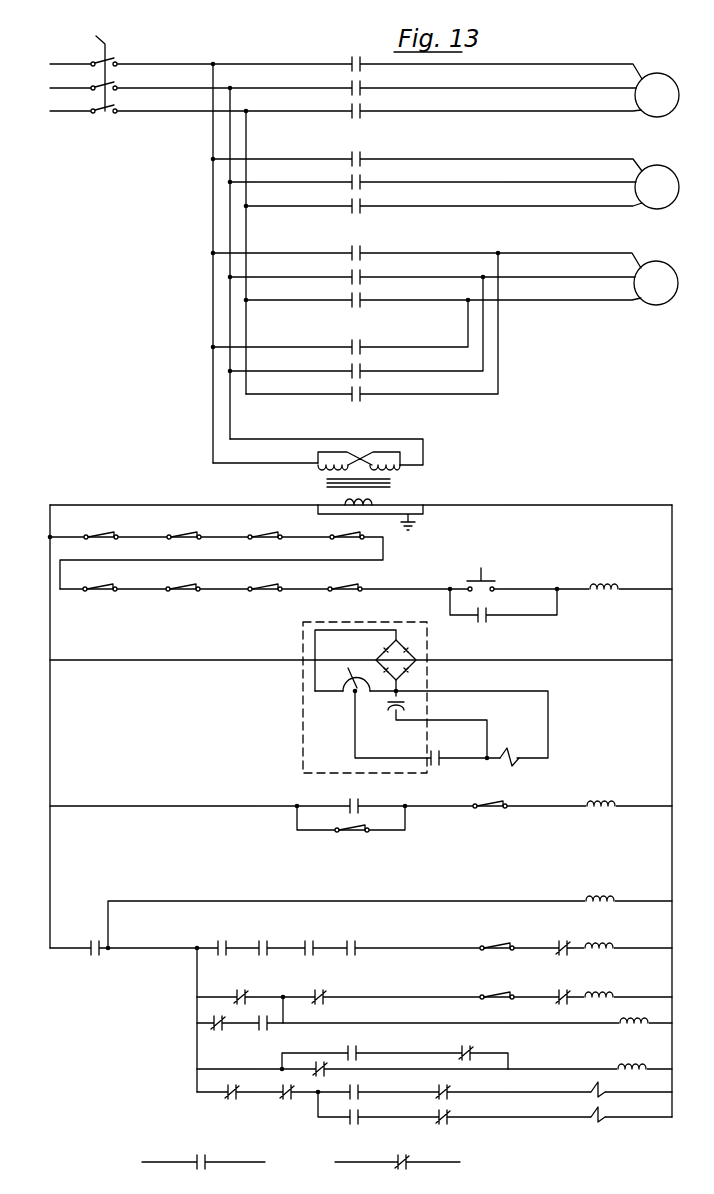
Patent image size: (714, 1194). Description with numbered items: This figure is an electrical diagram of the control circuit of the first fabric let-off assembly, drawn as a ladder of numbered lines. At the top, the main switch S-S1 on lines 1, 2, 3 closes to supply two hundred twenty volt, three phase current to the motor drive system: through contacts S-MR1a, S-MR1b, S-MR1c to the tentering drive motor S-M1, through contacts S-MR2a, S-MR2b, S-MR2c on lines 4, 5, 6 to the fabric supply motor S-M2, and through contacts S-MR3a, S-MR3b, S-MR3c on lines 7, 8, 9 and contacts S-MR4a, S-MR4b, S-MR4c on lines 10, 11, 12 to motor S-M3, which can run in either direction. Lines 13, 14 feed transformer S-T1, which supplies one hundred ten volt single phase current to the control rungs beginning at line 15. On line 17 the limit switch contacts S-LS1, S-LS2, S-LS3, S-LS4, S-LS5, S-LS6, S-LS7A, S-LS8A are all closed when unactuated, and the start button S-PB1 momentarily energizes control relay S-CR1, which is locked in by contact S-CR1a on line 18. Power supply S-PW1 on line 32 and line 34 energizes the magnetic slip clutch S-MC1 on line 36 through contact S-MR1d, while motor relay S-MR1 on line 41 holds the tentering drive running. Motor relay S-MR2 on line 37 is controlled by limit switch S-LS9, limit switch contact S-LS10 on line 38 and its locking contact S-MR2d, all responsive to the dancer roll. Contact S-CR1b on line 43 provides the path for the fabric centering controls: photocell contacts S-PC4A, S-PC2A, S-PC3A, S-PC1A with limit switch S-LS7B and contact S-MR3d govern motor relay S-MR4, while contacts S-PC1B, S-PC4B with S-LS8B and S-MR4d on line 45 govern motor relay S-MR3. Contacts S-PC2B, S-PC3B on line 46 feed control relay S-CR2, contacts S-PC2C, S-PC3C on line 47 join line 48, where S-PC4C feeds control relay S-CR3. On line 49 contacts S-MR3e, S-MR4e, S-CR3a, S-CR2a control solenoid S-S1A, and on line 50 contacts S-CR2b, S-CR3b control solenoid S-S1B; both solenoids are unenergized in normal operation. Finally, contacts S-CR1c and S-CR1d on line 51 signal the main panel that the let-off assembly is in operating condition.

The main switch S-S1 is at (94, 62).
The tentering drive motor S-M1 is at (657, 95).
The fabric supply motor S-M2 is at (657, 187).
The fabric centering motor S-M3 is at (656, 283).
The motor relay contact S-MR1a is at (346, 59).
The motor relay contact S-MR1b is at (346, 83).
The motor relay contact S-MR1c is at (345, 106).
The motor relay contact S-MR1d is at (444, 752).
The motor relay contact S-MR2a is at (346, 154).
The motor relay contact S-MR2b is at (346, 177).
The motor relay contact S-MR2c is at (345, 201).
The locking contact S-MR2d is at (348, 800).
The motor relay contact S-MR3a is at (346, 248).
The motor relay contact S-MR3b is at (346, 272).
The motor relay contact S-MR3c is at (345, 295).
The motor relay contact S-MR3d is at (550, 956).
The motor relay contact S-MR3e is at (210, 1098).
The motor relay contact S-MR4a is at (346, 342).
The motor relay contact S-MR4b is at (346, 366).
The motor relay contact S-MR4c is at (345, 389).
The motor relay contact S-MR4d is at (550, 1005).
The motor relay contact S-MR4e is at (276, 1098).
The motor relay S-MR1 is at (596, 891).
The motor relay S-MR2 is at (598, 796).
The motor relay S-MR3 is at (599, 985).
The motor relay S-MR4 is at (594, 936).
The transformer S-T1 is at (385, 491).
The limit switch contact S-LS1 is at (97, 528).
The limit switch contact S-LS2 is at (179, 528).
The limit switch contact S-LS3 is at (261, 528).
The limit switch contact S-LS4 is at (342, 528).
The limit switch contact S-LS5 is at (96, 579).
The limit switch contact S-LS6 is at (179, 579).
The limit switch contact S-LS7A is at (259, 579).
The limit switch contact S-LS8A is at (340, 579).
The limit switch contact S-LS7B is at (489, 939).
The limit switch contact S-LS8B is at (489, 988).
The limit switch S-LS9 is at (485, 797).
The limit switch contact S-LS10 is at (344, 842).
The start button S-PB1 is at (492, 568).
The control relay S-CR1 is at (601, 578).
The relay contact S-CR1a is at (503, 612).
The relay contact S-CR1b is at (76, 956).
The relay contact S-CR1c is at (185, 1154).
The relay contact S-CR1d is at (387, 1154).
The control relay S-CR2 is at (624, 1031).
The relay contact S-CR2a is at (460, 1086).
The relay contact S-CR2b is at (374, 1112).
The control relay S-CR3 is at (629, 1076).
The relay contact S-CR3a is at (374, 1087).
The relay contact S-CR3b is at (462, 1112).
The power supply S-PW1 is at (395, 697).
The magnetic slip clutch S-MC1 is at (509, 753).
The photocell actuated contact S-PC1A is at (337, 956).
The photocell actuated contact S-PC1B is at (229, 990).
The photocell actuated contact S-PC2A is at (255, 956).
The photocell actuated contact S-PC2B is at (217, 1030).
The photocell actuated contact S-PC2C is at (349, 1046).
The photocell actuated contact S-PC3A is at (309, 941).
The photocell actuated contact S-PC3B is at (279, 1030).
The photocell actuated contact S-PC3C is at (461, 1048).
The photocell actuated contact S-PC4A is at (209, 941).
The photocell actuated contact S-PC4B is at (319, 1004).
The photocell actuated contact S-PC4C is at (314, 1074).
The solenoid S-S1A is at (572, 1086).
The solenoid S-S1B is at (587, 1123).
The line 1 is at (331, 67).
The line 2 is at (328, 89).
The line 3 is at (330, 112).
The line 4 is at (331, 161).
The line 5 is at (328, 183).
The line 6 is at (331, 207).
The line 7 is at (330, 256).
The line 8 is at (327, 278).
The line 9 is at (330, 301).
The line 10 is at (242, 328).
The line 11 is at (249, 329).
The line 12 is at (257, 328).
The line 13 is at (219, 448).
The line 14 is at (167, 464).
The line 15 is at (344, 506).
The line 17 is at (199, 559).
The line 18 is at (344, 603).
The line 32 is at (344, 661).
The line 34 is at (282, 721).
The line 36 is at (258, 726).
The line 37 is at (344, 807).
The line 38 is at (210, 823).
The line 41 is at (344, 920).
The line 43 is at (344, 949).
The line 45 is at (344, 998).
The line 46 is at (344, 1024).
The line 47 is at (262, 1057).
The line 48 is at (344, 1070).
The line 49 is at (344, 1093).
The line 50 is at (344, 1109).
The line 51 is at (238, 1163).